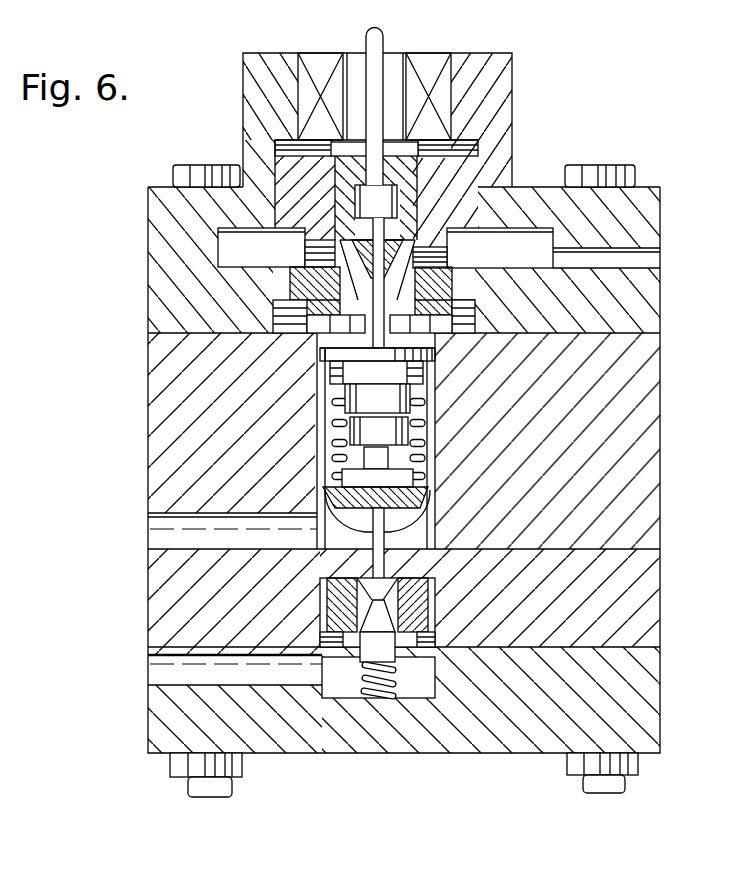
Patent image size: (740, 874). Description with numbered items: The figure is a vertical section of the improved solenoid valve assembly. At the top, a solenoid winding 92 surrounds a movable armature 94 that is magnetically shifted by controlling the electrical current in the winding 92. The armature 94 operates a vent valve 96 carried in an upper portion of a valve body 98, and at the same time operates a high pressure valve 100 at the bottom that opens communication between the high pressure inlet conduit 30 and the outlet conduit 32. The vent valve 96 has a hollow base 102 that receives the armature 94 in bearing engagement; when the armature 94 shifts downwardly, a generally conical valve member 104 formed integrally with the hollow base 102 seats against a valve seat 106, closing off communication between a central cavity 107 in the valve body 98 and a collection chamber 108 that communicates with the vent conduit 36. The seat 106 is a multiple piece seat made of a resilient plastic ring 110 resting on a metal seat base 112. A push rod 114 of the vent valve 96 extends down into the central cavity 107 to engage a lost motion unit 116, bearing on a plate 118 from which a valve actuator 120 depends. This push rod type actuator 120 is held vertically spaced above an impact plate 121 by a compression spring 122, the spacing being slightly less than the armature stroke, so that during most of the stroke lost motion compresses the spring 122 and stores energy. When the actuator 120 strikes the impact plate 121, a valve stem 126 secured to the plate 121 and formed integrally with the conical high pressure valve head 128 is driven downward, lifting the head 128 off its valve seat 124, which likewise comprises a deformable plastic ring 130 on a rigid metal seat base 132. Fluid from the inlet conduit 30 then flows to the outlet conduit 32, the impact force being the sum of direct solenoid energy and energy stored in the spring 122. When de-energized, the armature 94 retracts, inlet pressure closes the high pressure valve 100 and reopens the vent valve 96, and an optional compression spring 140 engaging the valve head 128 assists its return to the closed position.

The high pressure inlet conduit 30 is at (173, 683).
The outlet conduit 32 is at (160, 532).
The vent conduit 36 is at (632, 278).
The solenoid winding 92 is at (450, 100).
The armature 94 is at (385, 38).
The vent valve 96 is at (414, 221).
The valve body 98 is at (644, 212).
The high pressure valve 100 is at (356, 548).
The hollow base 102 is at (470, 151).
The valve member 104 is at (420, 253).
The valve seat 106 is at (290, 338).
The central cavity 107 is at (432, 464).
The collection chamber 108 is at (530, 262).
The resilient plastic ring 110 is at (277, 292).
The metal seat base 112 is at (288, 316).
The push rod 114 is at (436, 334).
The lost motion unit 116 is at (296, 404).
The plate 118 is at (438, 348).
The valve actuator 120 is at (392, 458).
The impact plate 121 is at (408, 495).
The compression spring 122 is at (332, 423).
The valve seat 124 is at (452, 592).
The valve stem 126 is at (386, 545).
The high pressure valve head 128 is at (434, 628).
The deformable plastic ring 130 is at (327, 618).
The rigid metal seat base 132 is at (330, 591).
The compression spring 140 is at (412, 690).